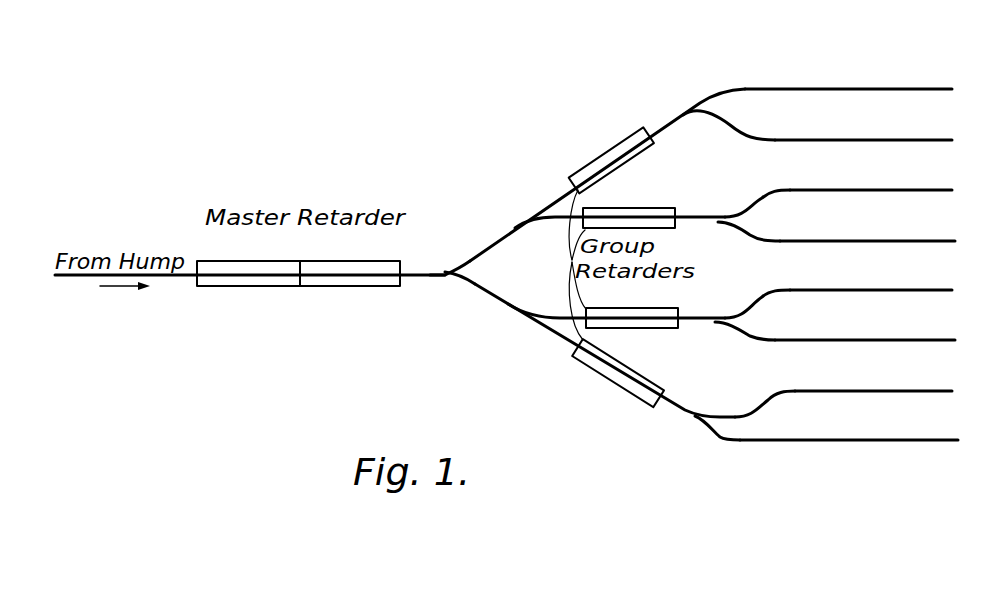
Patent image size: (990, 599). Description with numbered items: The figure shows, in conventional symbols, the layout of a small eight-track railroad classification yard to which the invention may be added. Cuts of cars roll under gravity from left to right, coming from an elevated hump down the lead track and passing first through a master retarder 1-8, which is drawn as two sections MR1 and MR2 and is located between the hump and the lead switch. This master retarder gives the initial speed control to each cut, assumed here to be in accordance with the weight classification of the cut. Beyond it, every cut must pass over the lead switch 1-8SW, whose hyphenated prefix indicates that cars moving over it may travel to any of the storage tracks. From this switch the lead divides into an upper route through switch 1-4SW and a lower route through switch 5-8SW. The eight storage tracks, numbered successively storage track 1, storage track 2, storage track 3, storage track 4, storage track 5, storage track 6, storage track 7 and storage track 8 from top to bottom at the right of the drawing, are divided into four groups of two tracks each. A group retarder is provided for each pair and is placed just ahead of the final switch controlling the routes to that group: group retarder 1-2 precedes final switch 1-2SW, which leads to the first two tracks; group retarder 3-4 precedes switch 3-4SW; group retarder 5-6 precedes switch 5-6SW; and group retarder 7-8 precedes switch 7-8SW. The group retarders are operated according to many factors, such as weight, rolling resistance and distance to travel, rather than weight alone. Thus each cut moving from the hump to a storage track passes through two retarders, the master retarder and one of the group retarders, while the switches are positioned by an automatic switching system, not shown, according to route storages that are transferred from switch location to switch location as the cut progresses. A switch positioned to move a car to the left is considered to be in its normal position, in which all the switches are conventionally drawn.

The master retarder 1-8 is at (331, 259).
The master retarder section MR1 is at (262, 287).
The master retarder section MR2 is at (370, 287).
The lead switch 1-8SW is at (445, 277).
The switch 1-4SW is at (528, 222).
The group retarder 1-2 is at (573, 182).
The switch 1-2SW is at (686, 116).
The group retarder 3-4 is at (661, 208).
The switch 3-4SW is at (718, 224).
The switch 5-8SW is at (512, 315).
The group retarder 5-6 is at (661, 308).
The switch 5-6SW is at (718, 323).
The group retarder 7-8 is at (654, 379).
The switch 7-8SW is at (684, 418).
The storage track 1 is at (848, 77).
The storage track 2 is at (863, 128).
The storage track 3 is at (871, 178).
The storage track 4 is at (867, 229).
The storage track 5 is at (871, 278).
The storage track 6 is at (865, 328).
The storage track 7 is at (873, 380).
The storage track 8 is at (849, 429).